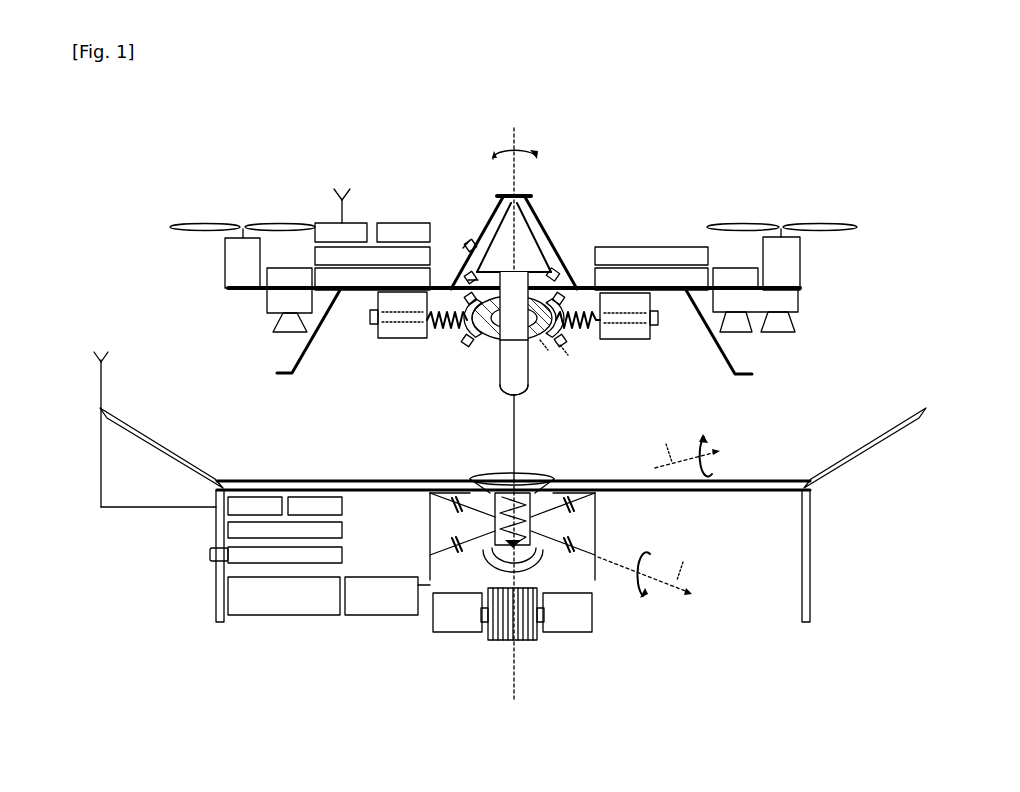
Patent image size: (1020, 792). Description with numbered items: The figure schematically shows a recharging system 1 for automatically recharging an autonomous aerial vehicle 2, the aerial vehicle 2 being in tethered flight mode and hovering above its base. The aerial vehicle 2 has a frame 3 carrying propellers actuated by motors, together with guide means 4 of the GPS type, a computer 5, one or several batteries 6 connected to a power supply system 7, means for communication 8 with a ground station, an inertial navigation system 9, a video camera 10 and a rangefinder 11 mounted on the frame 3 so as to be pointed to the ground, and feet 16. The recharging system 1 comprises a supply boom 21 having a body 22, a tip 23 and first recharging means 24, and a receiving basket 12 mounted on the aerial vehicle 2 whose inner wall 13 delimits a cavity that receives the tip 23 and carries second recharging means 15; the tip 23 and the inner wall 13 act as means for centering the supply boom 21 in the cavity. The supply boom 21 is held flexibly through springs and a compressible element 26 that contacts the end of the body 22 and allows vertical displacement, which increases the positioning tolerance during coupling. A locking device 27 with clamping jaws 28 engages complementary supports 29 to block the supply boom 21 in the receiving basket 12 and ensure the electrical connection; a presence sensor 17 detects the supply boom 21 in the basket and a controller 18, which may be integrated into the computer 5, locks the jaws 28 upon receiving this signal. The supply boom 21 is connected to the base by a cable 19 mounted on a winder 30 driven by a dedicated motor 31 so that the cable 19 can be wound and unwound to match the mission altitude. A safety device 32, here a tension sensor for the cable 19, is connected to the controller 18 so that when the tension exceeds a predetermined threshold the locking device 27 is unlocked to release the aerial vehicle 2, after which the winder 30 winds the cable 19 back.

The recharging system 1 is at (864, 171).
The autonomous aerial vehicle 2 is at (506, 125).
The frame 3 is at (232, 292).
The guide means 4 is at (403, 232).
The computer 5 is at (372, 279).
The battery 6 is at (651, 256).
The power supply system 7 is at (651, 279).
The means for communication 8 is at (341, 215).
The inertial navigation system 9 is at (372, 256).
The video camera 10 is at (289, 300).
The rangefinder 11 is at (755, 310).
The receiving basket 12 is at (556, 262).
The inner wall 13 is at (465, 280).
The second recharging means 15 is at (495, 214).
The feet 16 is at (276, 373).
The presence sensor 17 is at (467, 243).
The controller 18 is at (470, 346).
The cable 19 is at (510, 439).
The supply boom 21 is at (495, 386).
The body 22 is at (514, 333).
The tip 23 is at (514, 242).
The first recharging means 24 is at (463, 258).
The compressible element 26 is at (560, 346).
The locking device 27 is at (423, 355).
The clamping jaws 28 is at (463, 340).
The complementary support 29 is at (536, 342).
The winder 30 is at (532, 642).
The motor 31 is at (457, 612).
The safety device 32 is at (567, 612).